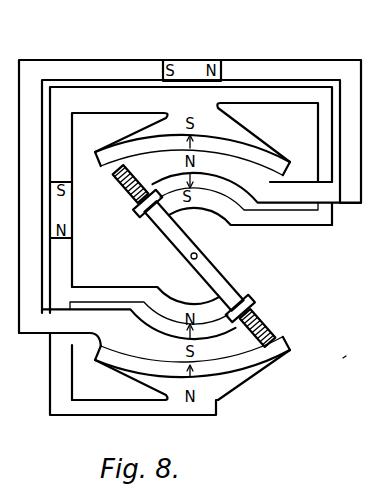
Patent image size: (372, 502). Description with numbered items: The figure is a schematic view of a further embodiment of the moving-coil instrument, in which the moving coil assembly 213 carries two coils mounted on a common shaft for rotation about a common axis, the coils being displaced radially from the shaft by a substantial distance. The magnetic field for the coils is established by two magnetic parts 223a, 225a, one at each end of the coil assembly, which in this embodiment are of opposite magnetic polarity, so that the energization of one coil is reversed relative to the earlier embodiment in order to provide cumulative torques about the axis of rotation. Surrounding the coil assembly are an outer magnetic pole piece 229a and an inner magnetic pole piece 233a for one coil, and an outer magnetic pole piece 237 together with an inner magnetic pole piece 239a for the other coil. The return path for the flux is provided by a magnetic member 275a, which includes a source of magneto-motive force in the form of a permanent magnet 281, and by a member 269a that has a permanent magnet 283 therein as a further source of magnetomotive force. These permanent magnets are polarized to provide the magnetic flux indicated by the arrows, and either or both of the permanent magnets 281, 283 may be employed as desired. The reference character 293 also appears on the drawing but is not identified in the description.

The magnetic member 275a is at (22, 88).
The permanent magnet 281 is at (197, 60).
The member 269a is at (65, 258).
The permanent magnet 283 is at (72, 213).
The outer magnetic pole piece 229a is at (127, 134).
The inner magnetic pole piece 233a is at (233, 227).
The outer magnetic pole piece 237 is at (263, 371).
The moving coil assembly 213 is at (177, 240).
The inner magnetic pole piece 239a is at (243, 295).
The magnetic part 223a is at (110, 178).
The magnetic part 225a is at (268, 326).
The air gap 293 is at (356, 353).